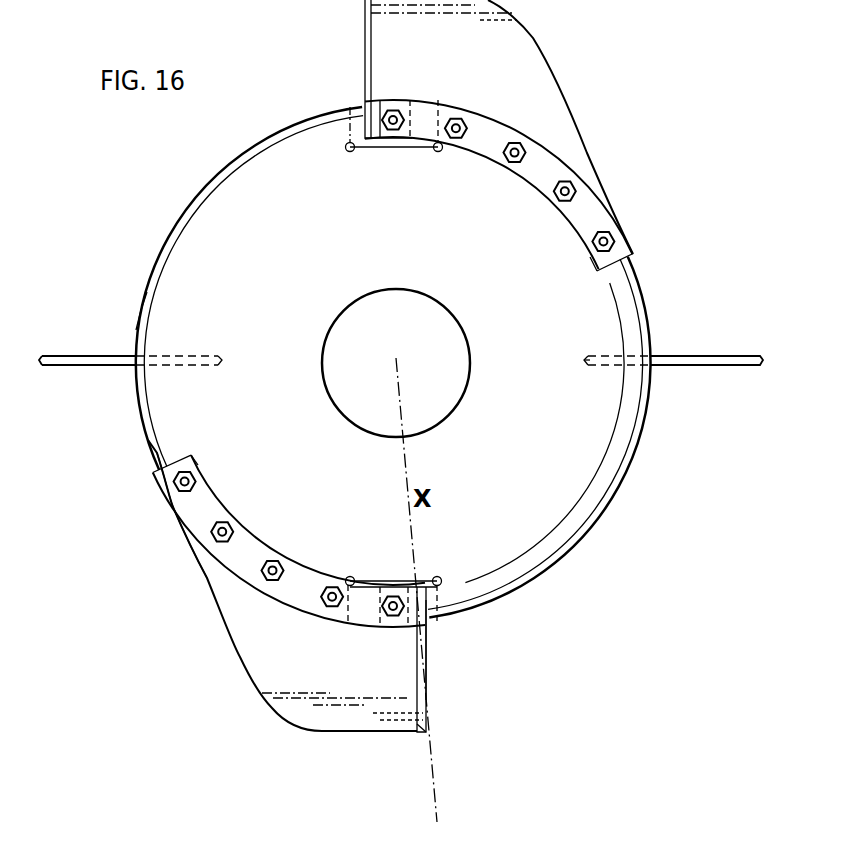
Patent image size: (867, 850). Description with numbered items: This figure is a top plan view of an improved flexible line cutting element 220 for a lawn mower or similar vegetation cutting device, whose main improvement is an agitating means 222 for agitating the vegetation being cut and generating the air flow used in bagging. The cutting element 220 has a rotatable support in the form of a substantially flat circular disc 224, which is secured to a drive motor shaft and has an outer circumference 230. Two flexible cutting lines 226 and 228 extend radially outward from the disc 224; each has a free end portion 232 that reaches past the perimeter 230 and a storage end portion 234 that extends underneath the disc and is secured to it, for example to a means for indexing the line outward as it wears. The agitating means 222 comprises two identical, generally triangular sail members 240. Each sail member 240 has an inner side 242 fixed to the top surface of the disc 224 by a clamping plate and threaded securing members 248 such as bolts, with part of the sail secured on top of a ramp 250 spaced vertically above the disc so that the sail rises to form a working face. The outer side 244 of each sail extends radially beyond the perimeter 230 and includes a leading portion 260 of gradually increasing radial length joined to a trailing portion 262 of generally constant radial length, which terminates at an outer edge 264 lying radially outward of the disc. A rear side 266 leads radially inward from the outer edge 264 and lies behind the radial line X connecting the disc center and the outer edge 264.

The flexible line cutting element 220 is at (172, 204).
The agitating means 222 is at (617, 97).
The disc 224 is at (460, 253).
The flexible cutting line 226 is at (121, 371).
The flexible cutting line 228 is at (606, 368).
The outer circumference 230 is at (145, 318).
The free end portion 232 is at (88, 354).
The storage end portion 234 is at (598, 354).
The sail member 240 is at (188, 566).
The inner side 242 is at (323, 578).
The outer side 244 is at (251, 648).
The threaded securing members 248 is at (598, 250).
The ramp 250 is at (399, 141).
The leading portion 260 is at (230, 605).
The trailing portion 262 is at (370, 712).
The outer edge 264 is at (427, 733).
The rear side 266 is at (427, 664).